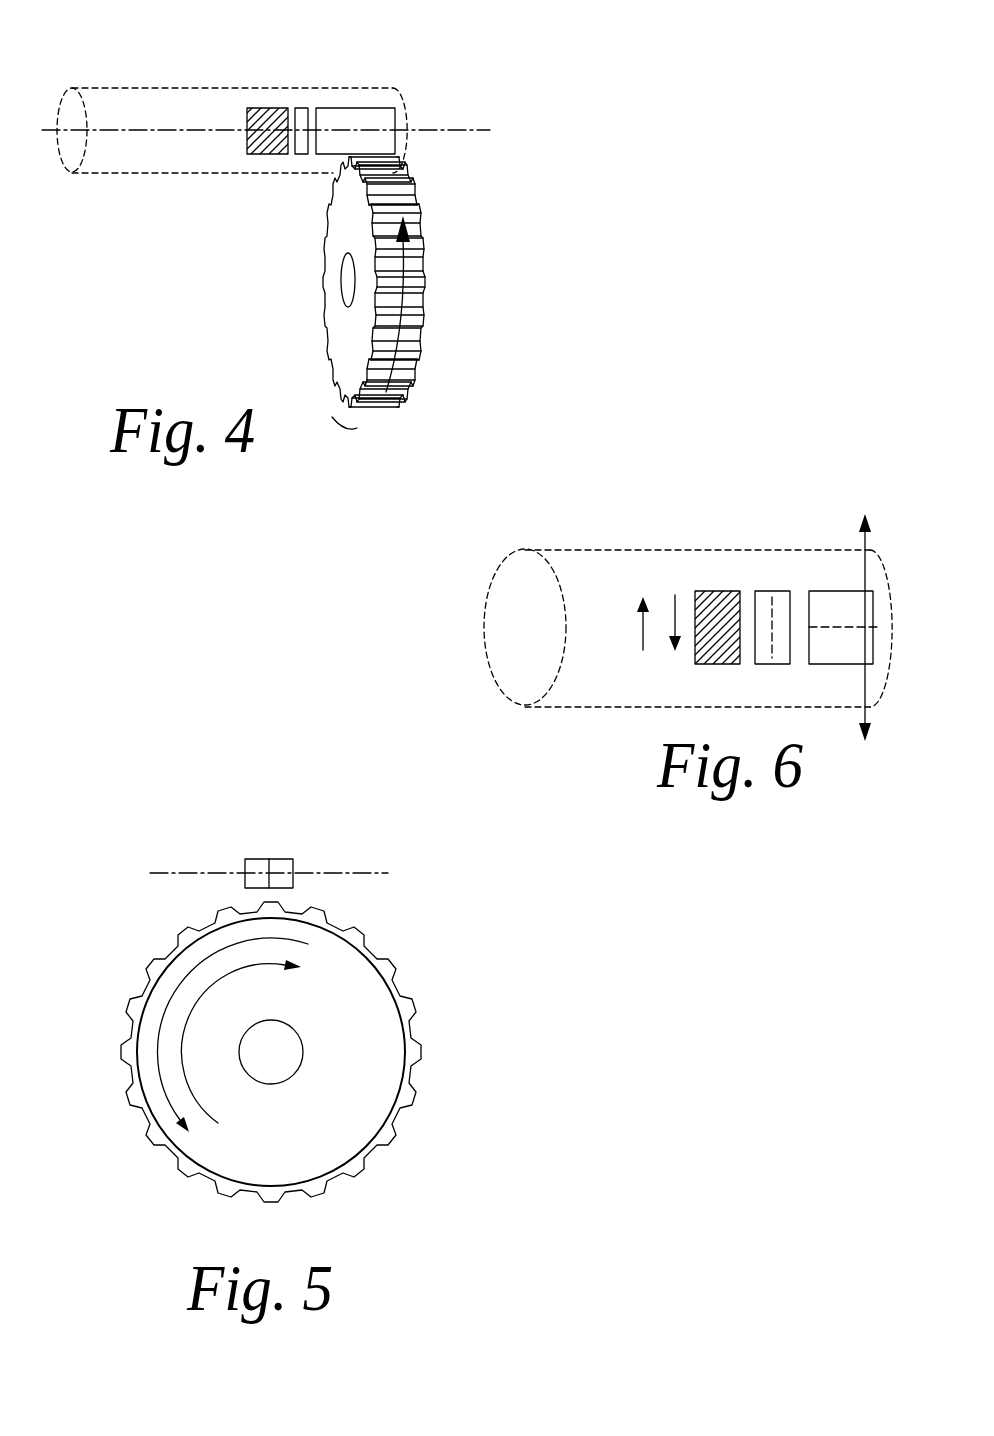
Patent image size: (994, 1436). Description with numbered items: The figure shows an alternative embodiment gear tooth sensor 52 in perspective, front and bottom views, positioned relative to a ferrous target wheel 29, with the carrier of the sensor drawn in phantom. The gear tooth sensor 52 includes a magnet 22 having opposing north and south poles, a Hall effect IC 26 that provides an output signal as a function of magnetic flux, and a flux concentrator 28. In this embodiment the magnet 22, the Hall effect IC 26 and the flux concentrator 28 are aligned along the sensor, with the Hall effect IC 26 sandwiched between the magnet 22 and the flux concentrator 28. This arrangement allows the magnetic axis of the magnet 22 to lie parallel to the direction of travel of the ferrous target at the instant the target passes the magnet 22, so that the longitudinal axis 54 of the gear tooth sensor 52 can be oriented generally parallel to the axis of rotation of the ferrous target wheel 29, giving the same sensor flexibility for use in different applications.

In FIG. 4, the magnet 22 is at (397, 108).
In FIG. 5, the magnet 22 is at (275, 859).
In FIG. 6, the magnet 22 is at (832, 591).
In FIG. 4, the Hall effect IC 26 is at (297, 108).
In FIG. 6, the Hall effect IC 26 is at (773, 591).
In FIG. 4, the flux concentrator 28 is at (247, 130).
In FIG. 6, the flux concentrator 28 is at (709, 591).
In FIG. 4, the ferrous target wheel 29 is at (405, 398).
In FIG. 5, the ferrous target wheel 29 is at (322, 1157).
In FIG. 4, the gear tooth sensor 52 is at (232, 272).
In FIG. 4, the longitudinal axis 54 is at (478, 128).